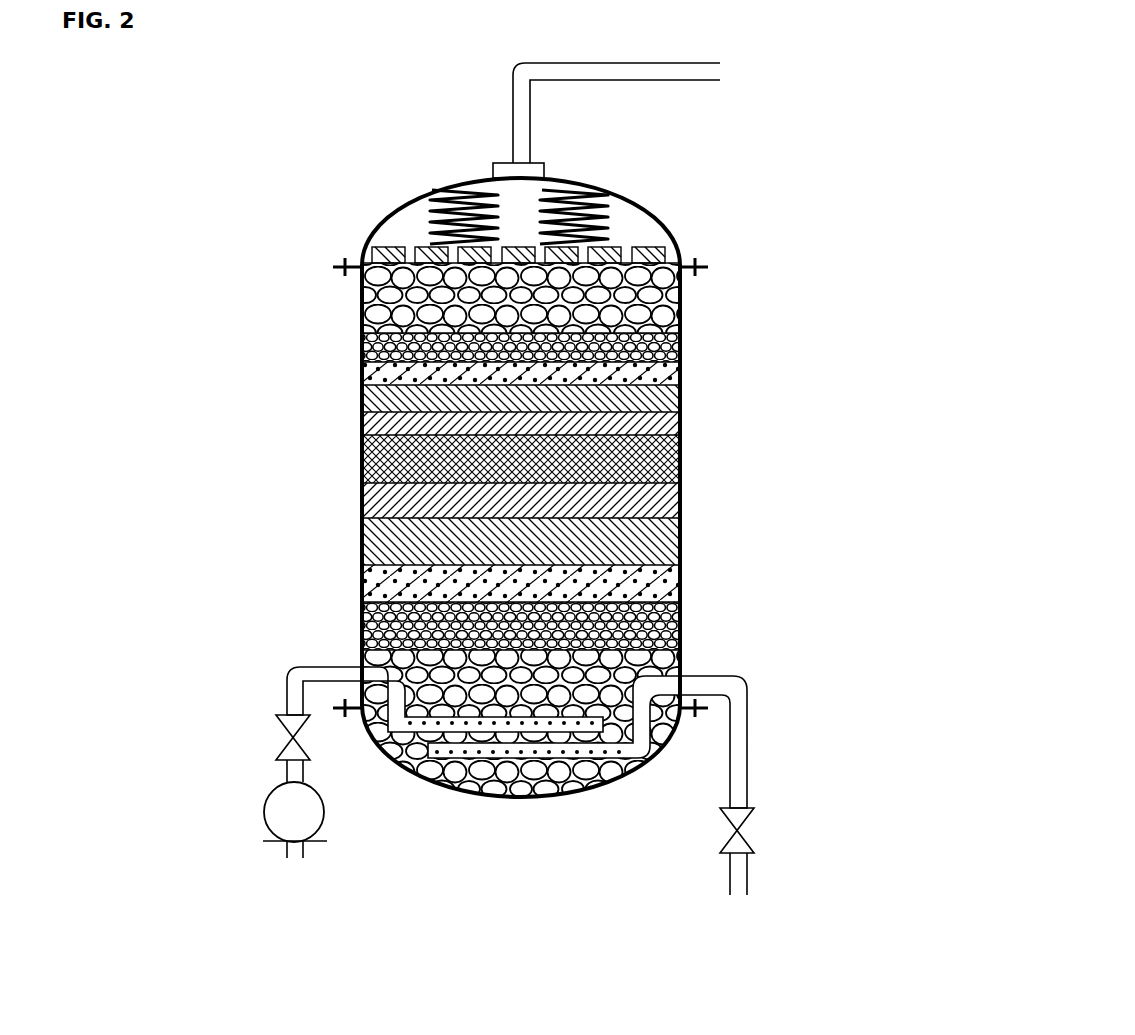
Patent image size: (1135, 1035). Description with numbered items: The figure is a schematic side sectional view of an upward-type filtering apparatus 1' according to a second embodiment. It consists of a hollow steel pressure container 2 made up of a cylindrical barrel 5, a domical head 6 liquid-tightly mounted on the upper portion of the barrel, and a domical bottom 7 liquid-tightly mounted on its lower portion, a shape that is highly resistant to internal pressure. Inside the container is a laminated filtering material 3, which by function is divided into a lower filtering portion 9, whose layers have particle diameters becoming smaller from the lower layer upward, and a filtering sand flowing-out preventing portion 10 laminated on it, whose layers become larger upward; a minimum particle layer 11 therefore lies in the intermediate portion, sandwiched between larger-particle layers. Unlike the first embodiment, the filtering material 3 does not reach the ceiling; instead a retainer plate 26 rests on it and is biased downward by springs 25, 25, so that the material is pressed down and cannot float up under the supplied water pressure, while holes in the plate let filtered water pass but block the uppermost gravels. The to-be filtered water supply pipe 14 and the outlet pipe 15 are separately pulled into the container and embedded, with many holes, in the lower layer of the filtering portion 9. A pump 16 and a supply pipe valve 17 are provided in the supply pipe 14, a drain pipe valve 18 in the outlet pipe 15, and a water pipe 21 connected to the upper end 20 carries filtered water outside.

The upward-type filtering apparatus 1' is at (147, 122).
The pressure container 2 is at (500, 511).
The filtering material 3 is at (475, 527).
The cylindrical barrel 5 is at (681, 565).
The domical head 6 is at (666, 228).
The domical bottom 7 is at (573, 796).
The filtering portion 9 is at (521, 602).
The filtering sand flowing-out preventing portion 10 is at (336, 255).
The minimum particle layer 11 is at (681, 450).
The to-be filtered water supply pipe 14 is at (287, 678).
The outlet pipe 15 is at (748, 706).
The pump 16 is at (268, 795).
The supply pipe valve 17 is at (280, 738).
The drain pipe valve 18 is at (756, 812).
The upper end 20 is at (500, 164).
The water pipe 21 is at (627, 80).
The springs 25 is at (432, 195).
The retainer plate 26 is at (393, 246).